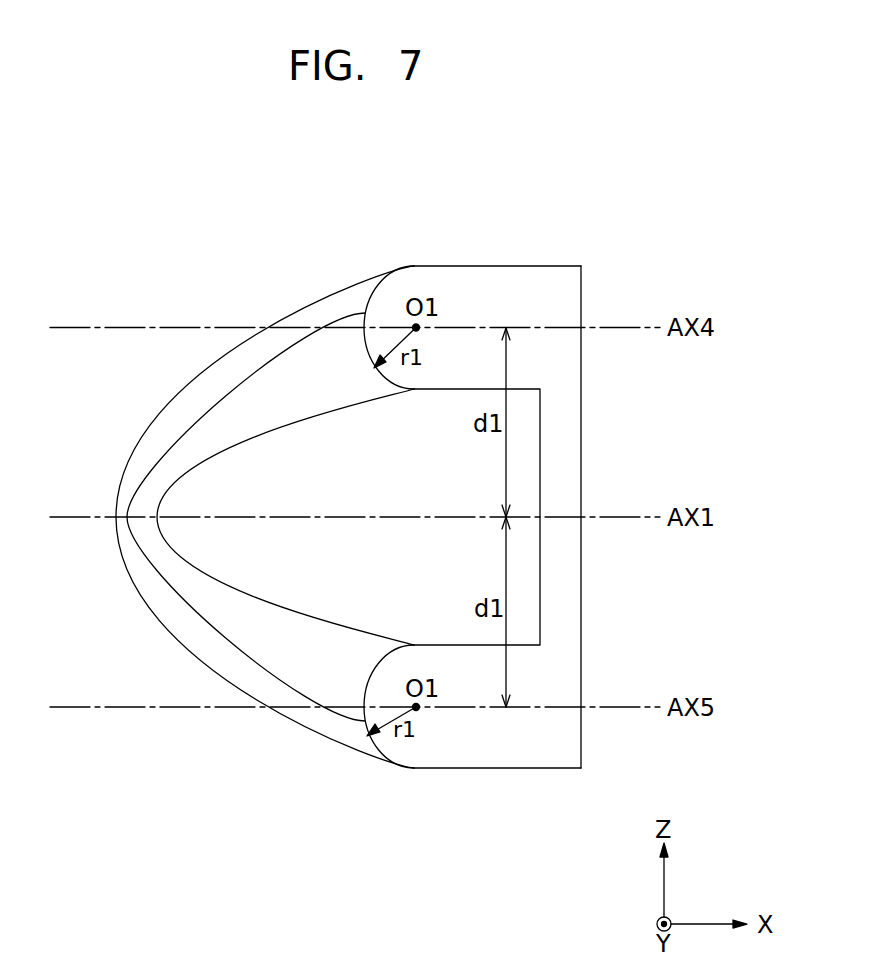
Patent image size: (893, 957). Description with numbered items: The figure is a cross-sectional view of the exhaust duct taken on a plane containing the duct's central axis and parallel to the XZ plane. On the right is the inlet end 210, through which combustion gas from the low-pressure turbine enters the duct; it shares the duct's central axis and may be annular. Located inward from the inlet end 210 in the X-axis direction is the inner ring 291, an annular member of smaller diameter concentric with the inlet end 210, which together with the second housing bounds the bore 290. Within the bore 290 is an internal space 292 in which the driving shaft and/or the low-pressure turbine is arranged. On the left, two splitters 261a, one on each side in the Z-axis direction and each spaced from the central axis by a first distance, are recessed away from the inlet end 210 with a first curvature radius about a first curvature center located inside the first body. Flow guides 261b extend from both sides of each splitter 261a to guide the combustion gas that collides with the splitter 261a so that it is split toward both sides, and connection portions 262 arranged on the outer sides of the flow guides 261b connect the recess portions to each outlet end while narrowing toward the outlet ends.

The inlet end 210 is at (581, 293).
The bore 290 is at (564, 471).
The inner ring 291 is at (540, 443).
The internal space 292 is at (303, 492).
The splitter 261a is at (367, 290).
The flow guide 261b is at (313, 317).
The connection portion 262 is at (188, 400).